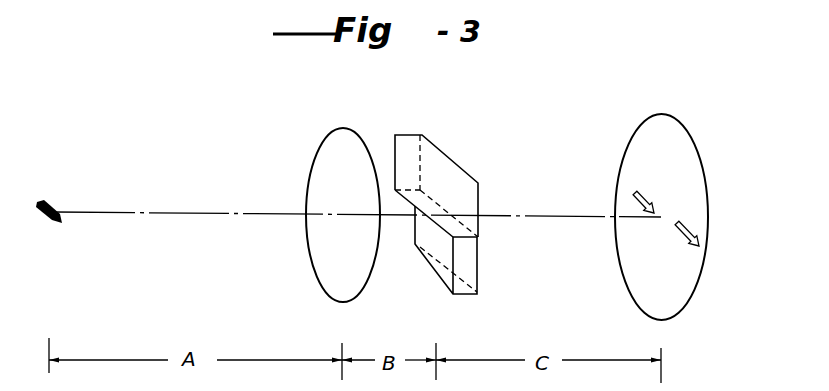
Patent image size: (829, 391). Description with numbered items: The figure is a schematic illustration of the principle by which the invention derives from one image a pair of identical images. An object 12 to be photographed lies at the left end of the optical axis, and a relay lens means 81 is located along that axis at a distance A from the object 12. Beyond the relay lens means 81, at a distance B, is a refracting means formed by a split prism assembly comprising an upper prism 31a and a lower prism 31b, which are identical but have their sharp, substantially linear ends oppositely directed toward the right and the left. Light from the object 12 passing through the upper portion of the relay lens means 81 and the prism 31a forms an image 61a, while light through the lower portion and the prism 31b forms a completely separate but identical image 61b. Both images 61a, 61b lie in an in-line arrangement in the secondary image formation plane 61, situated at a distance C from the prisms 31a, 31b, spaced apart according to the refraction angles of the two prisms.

The object 12 is at (50, 219).
The relay lens means 81 is at (311, 244).
The upper prism 31a is at (457, 165).
The lower prism 31b is at (478, 276).
The secondary image formation plane 61 is at (690, 163).
The first image 61a is at (634, 191).
The second image 61b is at (699, 236).